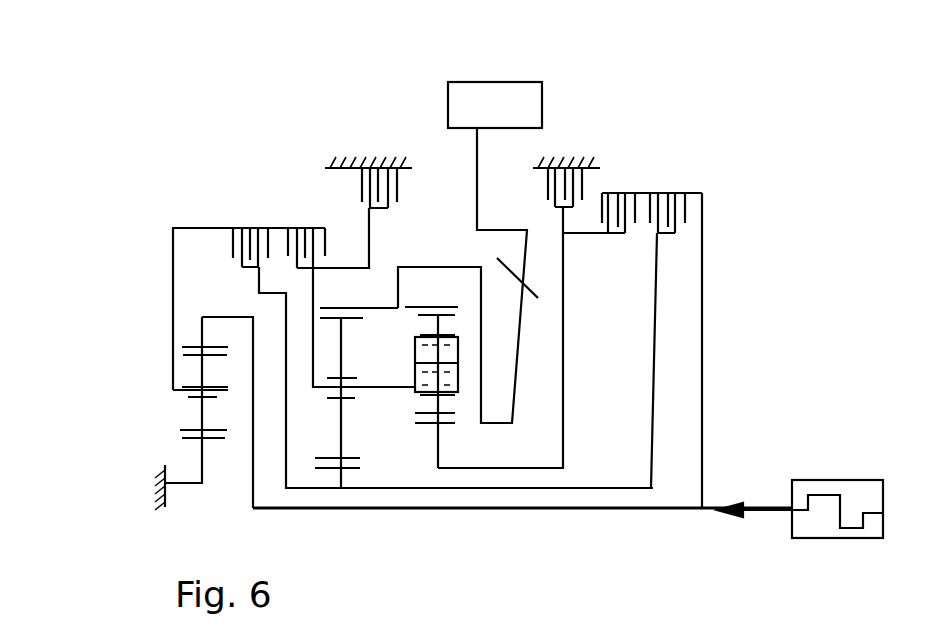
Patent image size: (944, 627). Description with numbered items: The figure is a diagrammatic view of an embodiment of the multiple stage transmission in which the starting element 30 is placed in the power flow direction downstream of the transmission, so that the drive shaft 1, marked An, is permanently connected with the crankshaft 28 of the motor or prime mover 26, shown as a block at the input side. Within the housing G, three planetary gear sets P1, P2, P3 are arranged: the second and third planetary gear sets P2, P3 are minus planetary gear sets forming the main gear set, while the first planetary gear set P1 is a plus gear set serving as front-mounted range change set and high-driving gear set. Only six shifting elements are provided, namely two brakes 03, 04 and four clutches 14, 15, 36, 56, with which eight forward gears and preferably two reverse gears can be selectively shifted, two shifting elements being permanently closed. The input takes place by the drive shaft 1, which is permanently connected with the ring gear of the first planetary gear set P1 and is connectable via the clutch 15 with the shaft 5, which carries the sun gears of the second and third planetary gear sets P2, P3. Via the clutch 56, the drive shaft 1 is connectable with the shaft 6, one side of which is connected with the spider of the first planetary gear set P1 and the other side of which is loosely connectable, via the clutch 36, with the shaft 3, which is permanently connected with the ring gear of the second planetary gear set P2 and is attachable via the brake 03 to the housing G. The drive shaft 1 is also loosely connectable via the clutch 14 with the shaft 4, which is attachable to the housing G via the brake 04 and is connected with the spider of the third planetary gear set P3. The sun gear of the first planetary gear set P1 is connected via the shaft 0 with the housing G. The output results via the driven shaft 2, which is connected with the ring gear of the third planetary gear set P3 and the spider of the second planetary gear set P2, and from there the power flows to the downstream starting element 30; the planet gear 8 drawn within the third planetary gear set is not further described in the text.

The starting element 30 is at (517, 82).
The fourth clutch 56 is at (250, 235).
The third clutch 36 is at (306, 235).
The first brake 03 is at (368, 182).
The second brake 04 is at (558, 182).
The first clutch 14 is at (618, 202).
The second clutch 15 is at (667, 202).
The shaft 0 is at (203, 443).
The drive shaft 1 is at (205, 338).
The sixth shaft 6 is at (208, 389).
The driven shaft 2 is at (390, 299).
The third shaft 3 is at (349, 383).
The fifth shaft 5 is at (337, 477).
The fourth shaft 4 is at (435, 432).
The planet gear 8 is at (443, 365).
The prime mover 26 is at (818, 538).
The crankshaft 28 is at (853, 538).
The drive shaft An is at (800, 507).
The housing G is at (370, 153).
The first planetary gear set P1 is at (173, 417).
The second planetary gear set P2 is at (373, 442).
The third planetary gear set P3 is at (470, 443).